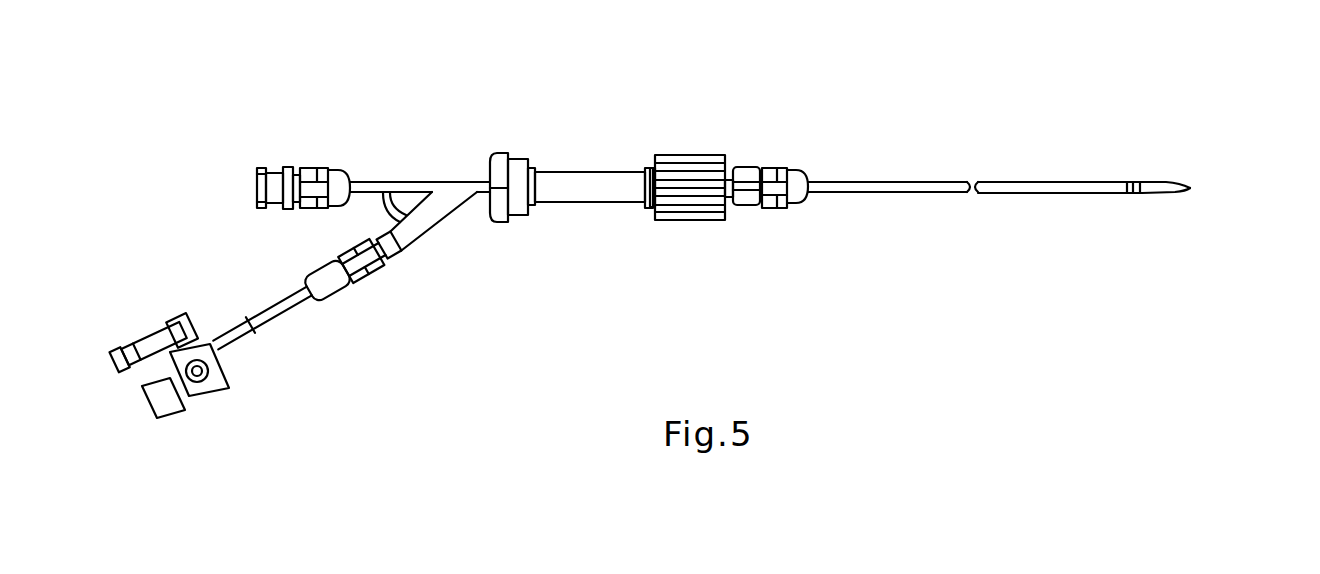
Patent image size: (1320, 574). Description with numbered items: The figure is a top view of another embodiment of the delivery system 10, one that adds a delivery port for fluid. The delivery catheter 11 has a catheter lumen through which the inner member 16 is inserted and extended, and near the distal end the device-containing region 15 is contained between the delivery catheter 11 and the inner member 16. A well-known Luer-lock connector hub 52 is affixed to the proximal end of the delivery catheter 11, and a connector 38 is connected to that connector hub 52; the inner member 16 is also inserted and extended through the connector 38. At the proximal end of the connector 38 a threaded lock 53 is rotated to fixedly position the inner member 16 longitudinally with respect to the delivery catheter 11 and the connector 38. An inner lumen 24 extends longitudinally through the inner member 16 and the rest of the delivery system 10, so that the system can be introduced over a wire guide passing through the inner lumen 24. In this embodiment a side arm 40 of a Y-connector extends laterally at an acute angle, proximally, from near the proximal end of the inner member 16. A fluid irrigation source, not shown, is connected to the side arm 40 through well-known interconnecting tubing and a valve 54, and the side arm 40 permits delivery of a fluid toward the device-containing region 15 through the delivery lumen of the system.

The delivery system 10 is at (777, 114).
The delivery catheter 11 is at (917, 183).
The device-containing region 15 is at (1098, 195).
The inner member 16 is at (443, 182).
The inner lumen 24 is at (249, 185).
The connector 38 is at (595, 173).
The side arm 40 is at (425, 234).
The Luer-lock connector hub 52 is at (777, 166).
The threaded lock 53 is at (498, 152).
The valve 54 is at (271, 326).